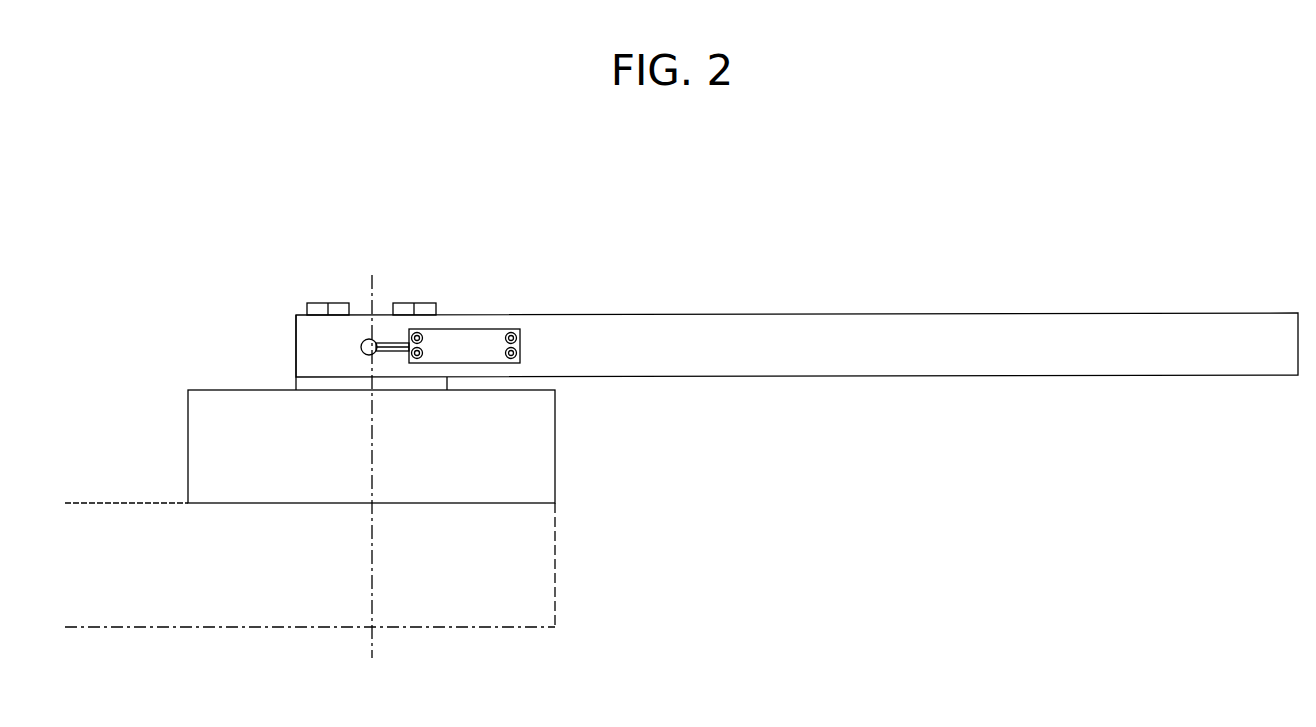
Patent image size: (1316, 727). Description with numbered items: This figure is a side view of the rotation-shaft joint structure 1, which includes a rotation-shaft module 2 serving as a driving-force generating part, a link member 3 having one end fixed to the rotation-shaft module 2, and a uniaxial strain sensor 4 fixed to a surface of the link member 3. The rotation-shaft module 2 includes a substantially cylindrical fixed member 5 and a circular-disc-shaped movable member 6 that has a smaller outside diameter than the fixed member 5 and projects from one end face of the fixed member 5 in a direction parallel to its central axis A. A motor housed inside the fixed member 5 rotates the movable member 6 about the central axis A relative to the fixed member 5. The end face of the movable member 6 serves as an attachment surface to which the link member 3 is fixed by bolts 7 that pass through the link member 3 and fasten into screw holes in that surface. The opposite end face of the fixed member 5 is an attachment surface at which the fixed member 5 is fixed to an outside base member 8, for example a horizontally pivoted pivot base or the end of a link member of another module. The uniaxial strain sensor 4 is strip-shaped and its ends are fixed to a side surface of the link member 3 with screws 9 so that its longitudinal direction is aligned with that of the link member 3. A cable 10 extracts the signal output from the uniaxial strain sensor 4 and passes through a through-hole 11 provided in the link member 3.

The rotation-shaft joint structure 1 is at (206, 222).
The rotation-shaft module 2 is at (204, 377).
The link member 3 is at (684, 313).
The uniaxial strain sensor 4 is at (477, 337).
The fixed member 5 is at (188, 427).
The movable member 6 is at (295, 386).
The bolts 7 is at (315, 303).
The outside base member 8 is at (555, 562).
The screws 9 is at (417, 360).
The cable 10 is at (388, 352).
The through-hole 11 is at (366, 356).
The central axis A is at (372, 645).